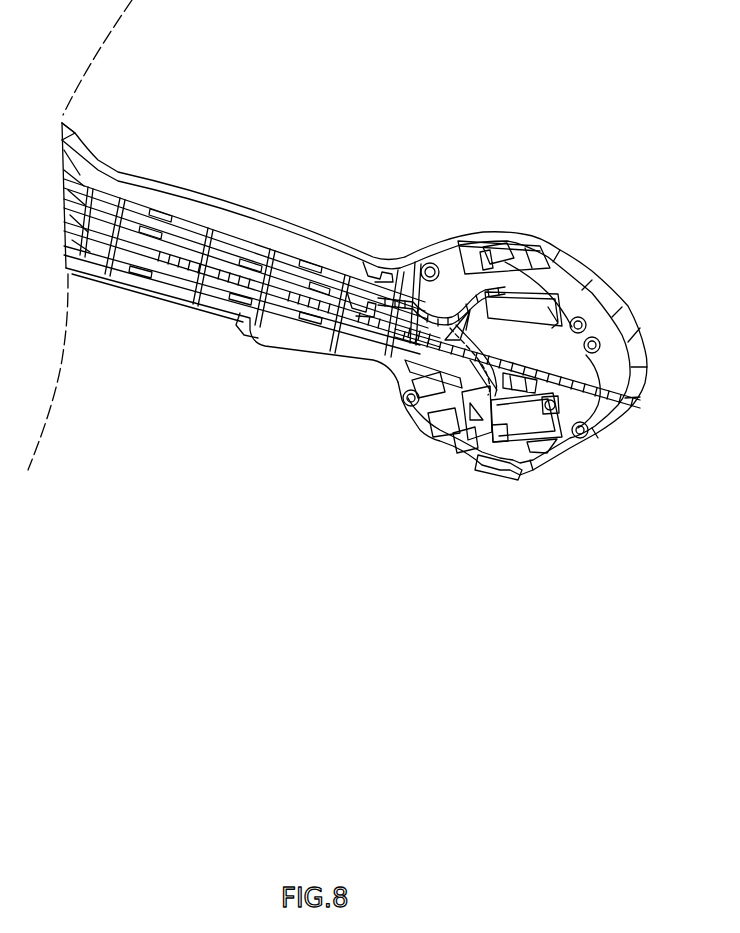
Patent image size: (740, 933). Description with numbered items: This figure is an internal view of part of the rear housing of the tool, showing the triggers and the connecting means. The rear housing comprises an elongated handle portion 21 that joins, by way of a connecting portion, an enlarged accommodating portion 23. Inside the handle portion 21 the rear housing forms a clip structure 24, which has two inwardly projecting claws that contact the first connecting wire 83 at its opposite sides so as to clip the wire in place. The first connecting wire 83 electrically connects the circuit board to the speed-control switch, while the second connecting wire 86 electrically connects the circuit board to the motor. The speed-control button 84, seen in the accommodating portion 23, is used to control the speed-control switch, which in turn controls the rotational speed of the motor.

The handle portion 21 is at (215, 197).
The accommodating portion 23 is at (582, 266).
The clip structure 24 is at (312, 243).
The first connecting wire 83 is at (188, 237).
The speed-control button 84 is at (501, 236).
The second connecting wire 86 is at (180, 248).